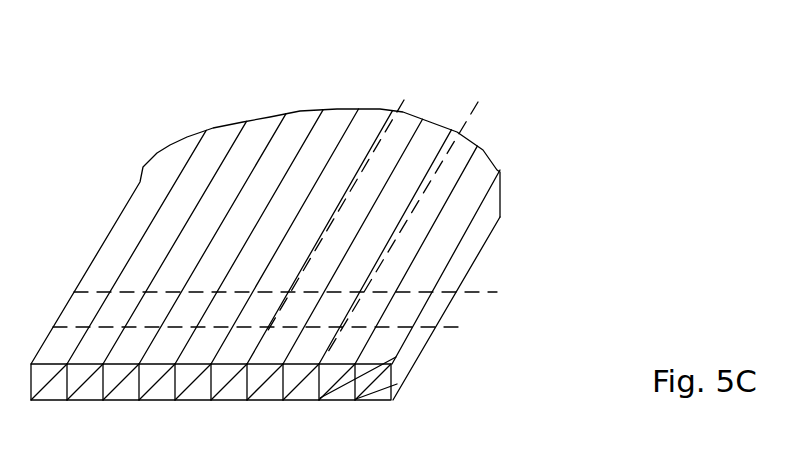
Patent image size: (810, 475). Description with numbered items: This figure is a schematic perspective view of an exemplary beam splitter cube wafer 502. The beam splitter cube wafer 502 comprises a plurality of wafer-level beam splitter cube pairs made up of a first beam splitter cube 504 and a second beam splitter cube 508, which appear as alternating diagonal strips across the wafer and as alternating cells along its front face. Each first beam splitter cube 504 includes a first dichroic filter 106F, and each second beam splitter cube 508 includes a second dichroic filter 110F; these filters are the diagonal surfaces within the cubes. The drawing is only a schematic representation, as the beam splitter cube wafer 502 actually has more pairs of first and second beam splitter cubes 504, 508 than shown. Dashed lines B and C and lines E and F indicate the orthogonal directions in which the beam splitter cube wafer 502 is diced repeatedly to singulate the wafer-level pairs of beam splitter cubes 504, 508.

The beam splitter cube wafer 502 is at (246, 57).
The second beam splitter cube 508 is at (300, 303).
The first beam splitter cube 504 is at (343, 305).
The second dichroic filter 110F is at (393, 362).
The first dichroic filter 106F is at (393, 390).